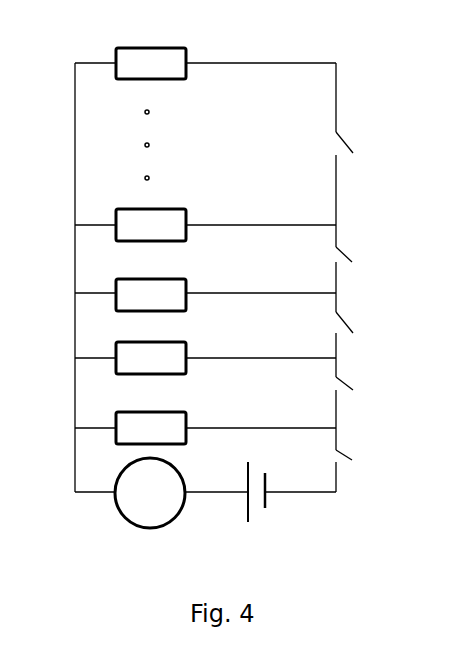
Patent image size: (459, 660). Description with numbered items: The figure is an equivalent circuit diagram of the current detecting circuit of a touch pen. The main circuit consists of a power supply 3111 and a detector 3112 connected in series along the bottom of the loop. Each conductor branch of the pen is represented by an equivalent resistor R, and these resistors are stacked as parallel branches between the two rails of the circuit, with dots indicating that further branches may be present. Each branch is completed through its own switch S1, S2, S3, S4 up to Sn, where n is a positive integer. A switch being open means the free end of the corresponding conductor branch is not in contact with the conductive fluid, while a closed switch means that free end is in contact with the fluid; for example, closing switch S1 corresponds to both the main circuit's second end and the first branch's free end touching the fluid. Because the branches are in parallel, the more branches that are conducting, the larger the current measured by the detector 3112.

The power supply 3111 is at (246, 520).
The detector 3112 is at (119, 512).
The resistor R is at (151, 246).
The switch S1 is at (366, 463).
The switch S2 is at (366, 392).
The switch S3 is at (366, 325).
The switch S4 is at (366, 255).
The switch Sn is at (366, 145).